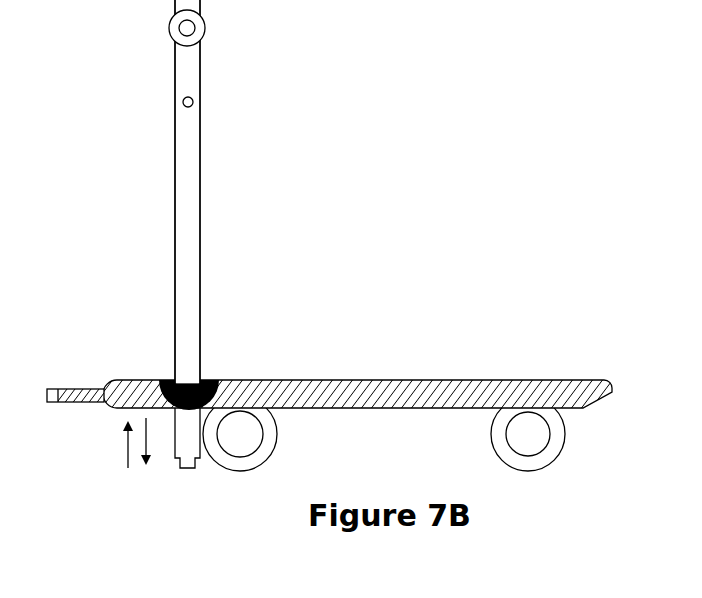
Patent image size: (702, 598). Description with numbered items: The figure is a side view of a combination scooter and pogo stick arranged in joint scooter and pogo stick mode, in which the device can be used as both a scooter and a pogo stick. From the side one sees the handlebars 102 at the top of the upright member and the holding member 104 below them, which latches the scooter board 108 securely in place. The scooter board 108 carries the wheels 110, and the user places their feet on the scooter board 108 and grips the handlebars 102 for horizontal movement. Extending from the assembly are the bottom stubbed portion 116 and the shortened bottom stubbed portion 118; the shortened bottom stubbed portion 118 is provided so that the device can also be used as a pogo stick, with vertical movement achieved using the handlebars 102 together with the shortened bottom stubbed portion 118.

The handlebars 102 is at (170, 33).
The holding member 104 is at (183, 103).
The scooter board 108 is at (598, 379).
The wheels 110 is at (505, 434).
The stubbed bottom portion 116 is at (73, 389).
The shortened stubbed bottom portion 118 is at (168, 457).